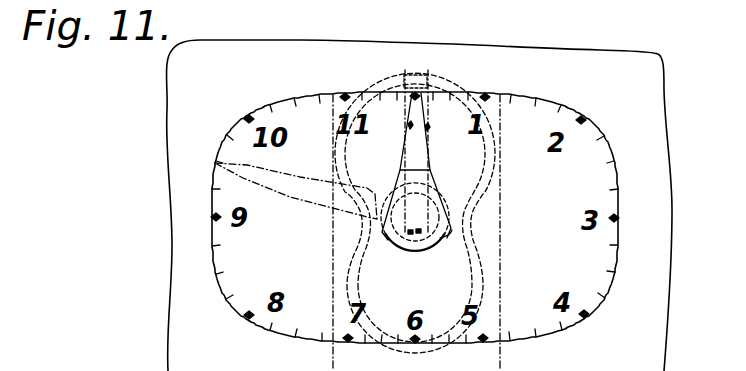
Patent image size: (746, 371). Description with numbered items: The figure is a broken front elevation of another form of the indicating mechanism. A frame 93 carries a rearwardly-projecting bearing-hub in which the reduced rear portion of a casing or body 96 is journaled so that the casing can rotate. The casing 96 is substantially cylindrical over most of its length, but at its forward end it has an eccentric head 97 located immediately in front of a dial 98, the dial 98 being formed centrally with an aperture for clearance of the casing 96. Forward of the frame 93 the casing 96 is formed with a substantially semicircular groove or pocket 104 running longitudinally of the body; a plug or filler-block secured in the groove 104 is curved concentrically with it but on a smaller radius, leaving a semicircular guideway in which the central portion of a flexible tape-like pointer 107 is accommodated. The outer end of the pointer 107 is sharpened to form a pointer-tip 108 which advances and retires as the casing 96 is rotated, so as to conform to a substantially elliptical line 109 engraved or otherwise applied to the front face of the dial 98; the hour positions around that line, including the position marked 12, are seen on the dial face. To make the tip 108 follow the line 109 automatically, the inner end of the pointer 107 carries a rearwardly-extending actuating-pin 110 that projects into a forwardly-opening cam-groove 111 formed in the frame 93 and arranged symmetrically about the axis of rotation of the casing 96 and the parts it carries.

The twelve o'clock index 12 is at (415, 92).
The frame 93 is at (500, 170).
The casing or body 96 is at (430, 240).
The eccentric head 97 is at (393, 230).
The dial 98 is at (173, 240).
The groove or pocket 104 is at (418, 236).
The flexible tape-like pointer 107 is at (411, 155).
The pointer-tip 108 is at (410, 108).
The substantially-elliptical line 109 is at (226, 134).
The actuating-pin 110 is at (416, 90).
The cam-groove 111 is at (350, 283).